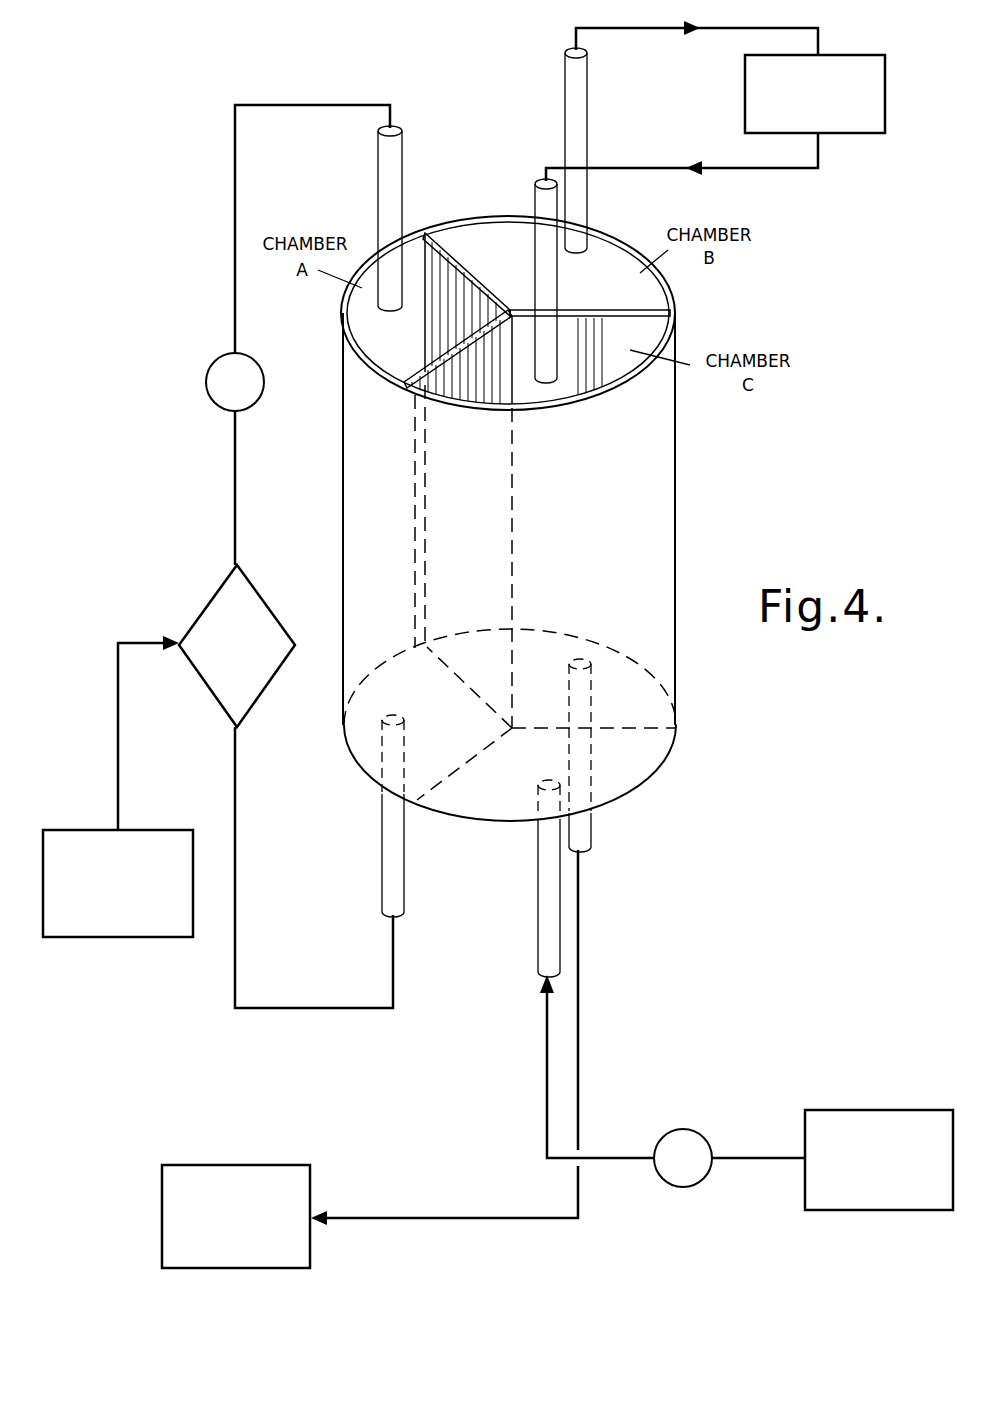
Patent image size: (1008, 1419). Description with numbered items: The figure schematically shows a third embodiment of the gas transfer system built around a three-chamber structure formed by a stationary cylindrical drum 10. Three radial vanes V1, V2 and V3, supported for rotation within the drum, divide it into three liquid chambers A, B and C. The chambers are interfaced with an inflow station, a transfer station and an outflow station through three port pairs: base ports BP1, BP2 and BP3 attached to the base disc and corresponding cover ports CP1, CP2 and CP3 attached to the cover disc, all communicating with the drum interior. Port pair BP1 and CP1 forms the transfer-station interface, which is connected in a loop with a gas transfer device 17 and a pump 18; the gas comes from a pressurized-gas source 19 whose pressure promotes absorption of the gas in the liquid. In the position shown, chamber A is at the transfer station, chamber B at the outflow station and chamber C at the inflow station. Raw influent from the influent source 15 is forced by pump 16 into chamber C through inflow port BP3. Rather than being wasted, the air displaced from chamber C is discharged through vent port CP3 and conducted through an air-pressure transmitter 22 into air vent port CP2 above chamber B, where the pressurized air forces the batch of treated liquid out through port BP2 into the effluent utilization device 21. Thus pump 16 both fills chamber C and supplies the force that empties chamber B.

The cylindrical drum 10 is at (676, 467).
The influent source 15 is at (870, 1112).
The pump 16 is at (696, 1138).
The gas transfer device 17 is at (271, 622).
The pump 18 is at (258, 400).
The pressurized-gas source 19 is at (192, 830).
The effluent utilization device 21 is at (312, 1170).
The air-pressure transmitter 22 is at (886, 134).
The cover port CP1 is at (403, 170).
The air vent port CP2 is at (588, 117).
The vent port CP3 is at (540, 183).
The base port BP1 is at (405, 858).
The base port BP2 is at (593, 845).
The inflow port BP3 is at (545, 945).
The radial vane V1 is at (470, 282).
The radial vane V2 is at (594, 308).
The radial vane V3 is at (448, 366).